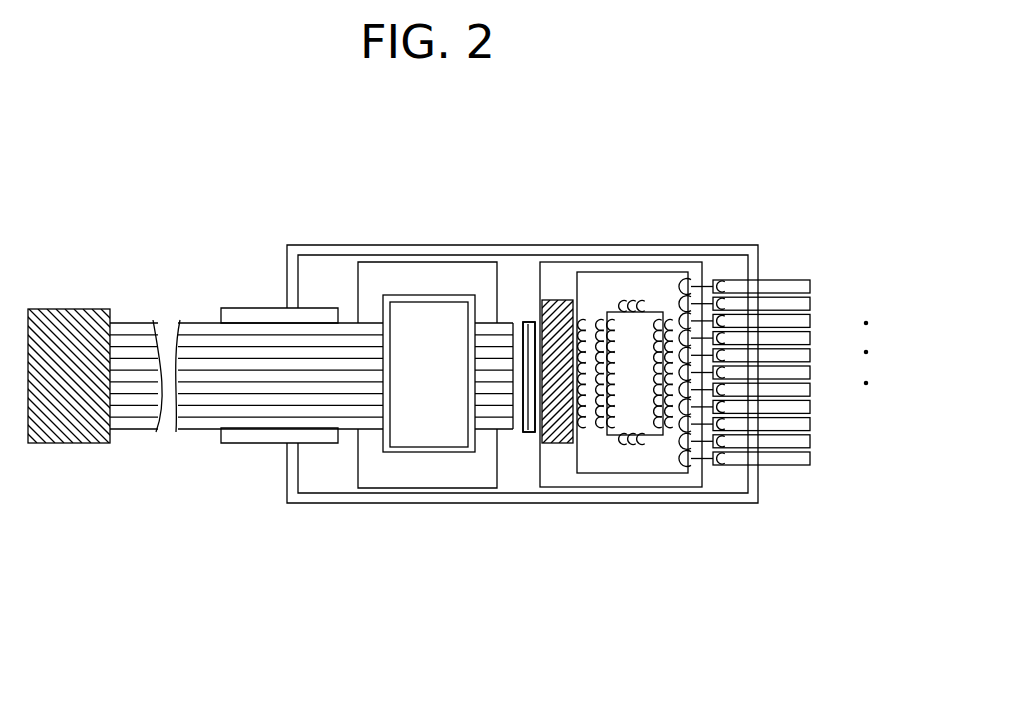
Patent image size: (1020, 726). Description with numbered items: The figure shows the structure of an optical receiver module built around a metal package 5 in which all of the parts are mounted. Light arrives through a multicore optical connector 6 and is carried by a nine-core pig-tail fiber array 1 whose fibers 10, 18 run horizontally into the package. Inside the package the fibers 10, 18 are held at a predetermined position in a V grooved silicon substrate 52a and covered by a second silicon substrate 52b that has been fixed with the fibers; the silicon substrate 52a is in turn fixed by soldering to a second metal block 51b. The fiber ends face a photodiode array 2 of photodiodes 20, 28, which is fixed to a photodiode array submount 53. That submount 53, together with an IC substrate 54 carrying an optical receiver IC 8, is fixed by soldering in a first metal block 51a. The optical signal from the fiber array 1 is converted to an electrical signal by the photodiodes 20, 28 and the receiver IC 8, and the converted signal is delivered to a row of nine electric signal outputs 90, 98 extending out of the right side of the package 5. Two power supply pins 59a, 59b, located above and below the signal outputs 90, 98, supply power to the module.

The 9-core pig-tail fiber array 1 is at (207, 373).
The photodiode array 2 is at (533, 433).
The metal package 5 is at (290, 244).
The multicore optical connector 6 is at (75, 443).
The optical receiver IC 8 is at (643, 407).
The fiber 10 is at (122, 330).
The fiber 18 is at (152, 423).
The photodiode 20 is at (540, 430).
The photodiode 28 is at (527, 320).
The first metal block 51a is at (653, 262).
The second metal block 51b is at (380, 262).
The V grooved silicon substrate 52a is at (467, 452).
The silicon substrate 52b is at (408, 450).
The photodiode array submount 53 is at (557, 300).
The IC substrate 54 is at (607, 477).
The power supply pin 59a is at (772, 278).
The power supply pin 59b is at (787, 465).
The electric signal output 90 is at (810, 303).
The electric signal output 98 is at (810, 441).